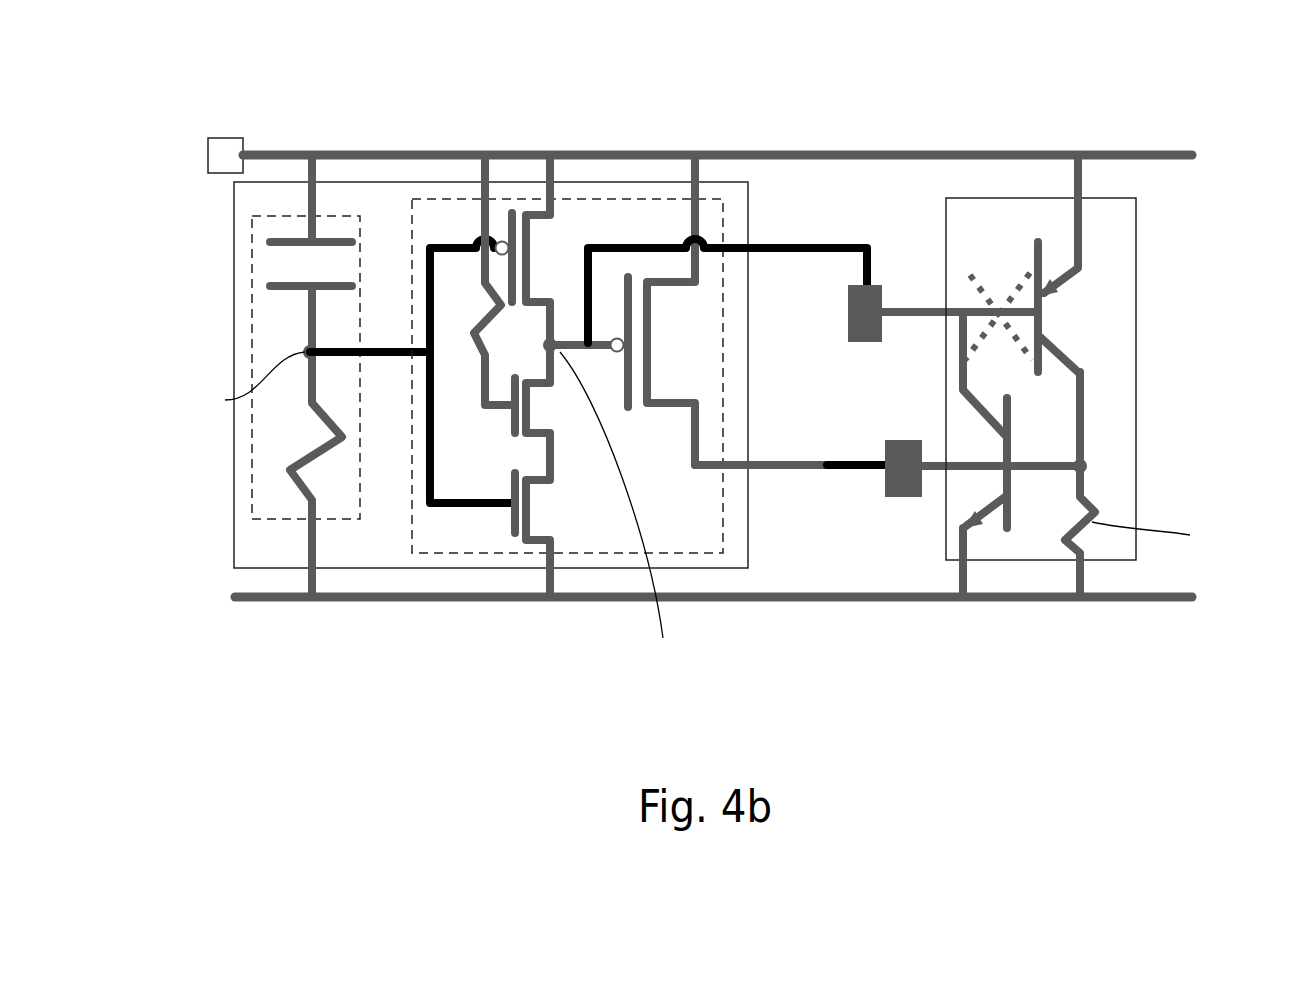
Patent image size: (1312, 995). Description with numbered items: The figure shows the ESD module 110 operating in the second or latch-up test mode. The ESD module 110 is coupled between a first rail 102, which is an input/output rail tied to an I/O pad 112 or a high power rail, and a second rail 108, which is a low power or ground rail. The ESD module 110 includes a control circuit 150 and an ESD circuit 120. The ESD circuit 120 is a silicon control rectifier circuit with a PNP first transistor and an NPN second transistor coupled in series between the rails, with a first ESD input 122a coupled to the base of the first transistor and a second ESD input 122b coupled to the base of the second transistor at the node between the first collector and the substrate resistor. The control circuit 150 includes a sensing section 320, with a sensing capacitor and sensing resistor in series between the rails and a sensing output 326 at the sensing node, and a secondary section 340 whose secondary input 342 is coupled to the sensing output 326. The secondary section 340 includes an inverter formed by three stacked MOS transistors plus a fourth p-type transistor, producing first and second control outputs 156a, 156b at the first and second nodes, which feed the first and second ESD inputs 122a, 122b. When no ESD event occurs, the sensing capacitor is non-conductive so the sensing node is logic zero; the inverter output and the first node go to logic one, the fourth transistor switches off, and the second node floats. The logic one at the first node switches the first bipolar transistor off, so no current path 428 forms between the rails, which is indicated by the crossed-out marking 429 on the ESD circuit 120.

The first rail 102 is at (1150, 152).
The second rail 108 is at (1152, 600).
The ESD module 110 is at (684, 377).
The I/O pad 112 is at (225, 138).
The ESD circuit 120 is at (1137, 265).
The first ESD input 122a is at (935, 308).
The second ESD input 122b is at (935, 470).
The control circuit 150 is at (233, 232).
The first control output 156a is at (783, 244).
The second control output 156b is at (790, 470).
The sensing section 320 is at (295, 212).
The sensing output 326 is at (368, 340).
The secondary section 340 is at (610, 196).
The secondary input 342 is at (388, 356).
The current path 428 is at (1032, 198).
The disabled conduction path (crossed out) 429 is at (1020, 332).